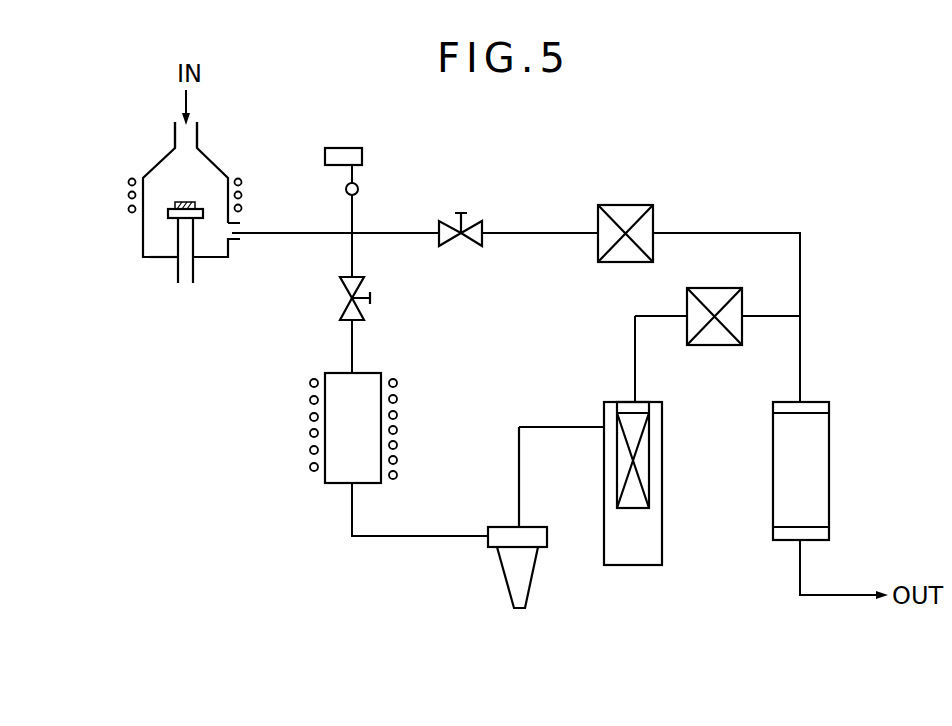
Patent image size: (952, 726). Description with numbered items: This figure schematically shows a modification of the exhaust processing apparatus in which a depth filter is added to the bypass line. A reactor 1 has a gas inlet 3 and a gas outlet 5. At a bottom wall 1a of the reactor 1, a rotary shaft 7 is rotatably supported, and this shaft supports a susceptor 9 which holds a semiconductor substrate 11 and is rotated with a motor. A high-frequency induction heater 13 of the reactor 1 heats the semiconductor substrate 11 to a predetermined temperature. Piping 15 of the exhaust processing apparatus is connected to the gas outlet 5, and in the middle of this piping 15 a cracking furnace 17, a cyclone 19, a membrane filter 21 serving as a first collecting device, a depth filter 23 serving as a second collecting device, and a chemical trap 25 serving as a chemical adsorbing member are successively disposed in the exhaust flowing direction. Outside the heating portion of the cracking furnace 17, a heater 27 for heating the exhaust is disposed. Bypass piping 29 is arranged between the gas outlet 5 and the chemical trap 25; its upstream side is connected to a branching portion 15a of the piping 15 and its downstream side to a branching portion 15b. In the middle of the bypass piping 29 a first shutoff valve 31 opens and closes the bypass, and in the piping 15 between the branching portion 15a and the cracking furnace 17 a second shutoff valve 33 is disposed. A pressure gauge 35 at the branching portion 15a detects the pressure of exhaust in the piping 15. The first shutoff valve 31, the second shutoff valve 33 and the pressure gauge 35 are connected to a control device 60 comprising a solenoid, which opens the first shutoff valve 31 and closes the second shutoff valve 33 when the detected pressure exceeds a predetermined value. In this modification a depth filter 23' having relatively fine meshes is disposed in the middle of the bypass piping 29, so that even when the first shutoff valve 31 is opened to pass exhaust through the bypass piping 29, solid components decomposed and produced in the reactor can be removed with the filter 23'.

The reactor 1 is at (134, 255).
The bottom wall 1a is at (158, 259).
The gas inlet 3 is at (196, 133).
The gas outlet 5 is at (232, 240).
The rotary shaft 7 is at (190, 277).
The susceptor 9 is at (168, 214).
The semiconductor substrate 11 is at (188, 200).
The high-frequency induction heater 13 is at (128, 180).
The piping 15 is at (355, 253).
The branching portion 15a is at (355, 230).
The branching portion 15b is at (802, 315).
The cracking furnace 17 is at (316, 489).
The cyclone 19 is at (527, 598).
The membrane filter 21 is at (665, 533).
The depth filter 23 is at (719, 339).
The depth filter 23' is at (626, 209).
The chemical trap 25 is at (820, 510).
The heater 27 is at (397, 430).
The bypass piping 29 is at (675, 231).
The first shutoff valve 31 is at (470, 225).
The second shutoff valve 33 is at (365, 310).
The pressure gauge 35 is at (357, 186).
The control device 60 is at (345, 150).